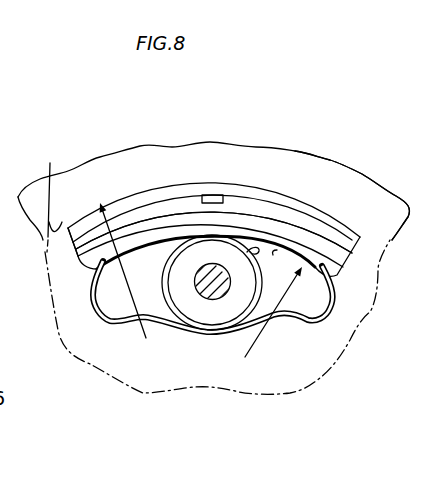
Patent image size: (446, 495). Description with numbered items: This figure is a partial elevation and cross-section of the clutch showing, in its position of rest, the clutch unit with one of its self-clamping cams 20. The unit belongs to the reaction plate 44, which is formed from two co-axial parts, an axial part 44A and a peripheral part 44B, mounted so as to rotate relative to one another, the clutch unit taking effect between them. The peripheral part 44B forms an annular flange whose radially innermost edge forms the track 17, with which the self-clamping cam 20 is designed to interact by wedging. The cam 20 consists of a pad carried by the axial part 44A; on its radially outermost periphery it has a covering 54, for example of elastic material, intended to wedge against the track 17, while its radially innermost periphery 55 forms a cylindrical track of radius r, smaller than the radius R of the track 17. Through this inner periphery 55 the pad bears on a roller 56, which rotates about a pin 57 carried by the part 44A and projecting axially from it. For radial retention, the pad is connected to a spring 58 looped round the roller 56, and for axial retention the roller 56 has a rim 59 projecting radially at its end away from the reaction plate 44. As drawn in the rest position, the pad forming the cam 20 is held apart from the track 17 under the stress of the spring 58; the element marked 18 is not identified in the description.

The track 17 is at (48, 197).
The shaft 18 is at (247, 252).
The self-clamping cam 20 is at (70, 257).
The reaction plate 44 is at (190, 137).
The axial part 44A is at (327, 379).
The peripheral part 44B is at (347, 172).
The covering 54 is at (145, 206).
The radially innermost periphery 55 is at (291, 212).
The roller 56 is at (193, 334).
The pin 57 is at (228, 287).
The spring 58 is at (235, 338).
The rim 59 is at (163, 292).
The radius of the track R is at (123, 280).
The radius of the cylindrical track r is at (273, 312).